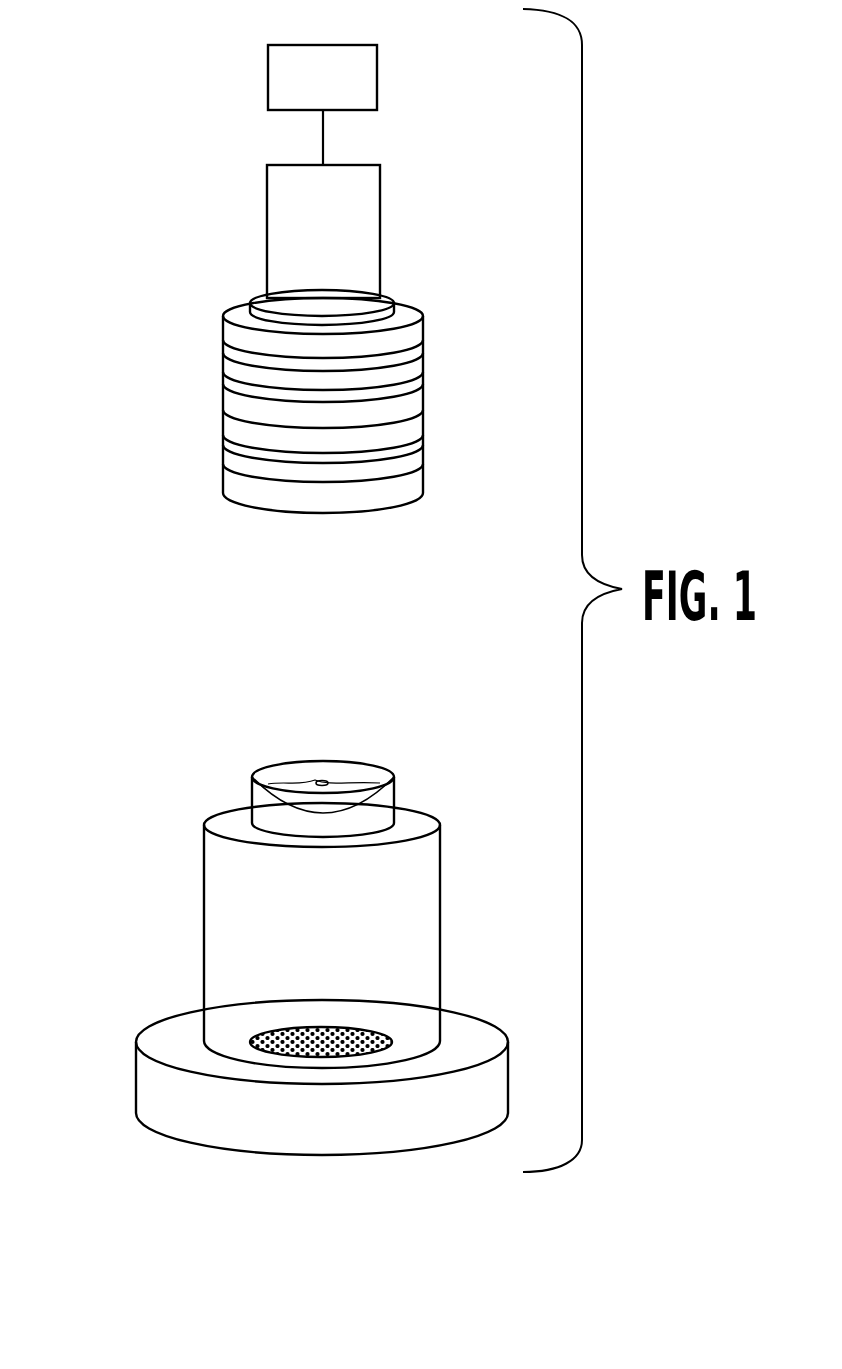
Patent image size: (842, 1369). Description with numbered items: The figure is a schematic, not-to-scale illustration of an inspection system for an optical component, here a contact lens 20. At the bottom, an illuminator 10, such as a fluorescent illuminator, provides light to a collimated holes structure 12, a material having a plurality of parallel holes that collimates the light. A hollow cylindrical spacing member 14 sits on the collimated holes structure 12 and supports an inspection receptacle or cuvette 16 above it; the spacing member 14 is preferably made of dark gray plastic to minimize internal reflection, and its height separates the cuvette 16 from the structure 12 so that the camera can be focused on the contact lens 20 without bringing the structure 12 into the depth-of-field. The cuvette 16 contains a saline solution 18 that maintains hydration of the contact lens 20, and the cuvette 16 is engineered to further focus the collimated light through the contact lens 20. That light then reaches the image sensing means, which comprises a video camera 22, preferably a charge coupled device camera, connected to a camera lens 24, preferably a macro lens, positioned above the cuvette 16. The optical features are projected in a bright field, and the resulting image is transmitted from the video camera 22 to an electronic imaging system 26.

The illuminator 10 is at (142, 1083).
The collimated holes structure 12 is at (350, 1027).
The spacing member 14 is at (207, 930).
The cuvette 16 is at (252, 798).
The saline solution 18 is at (396, 792).
The contact lens 20 is at (318, 779).
The video camera 22 is at (276, 219).
The camera lens 24 is at (225, 421).
The electronic imaging system 26 is at (275, 76).